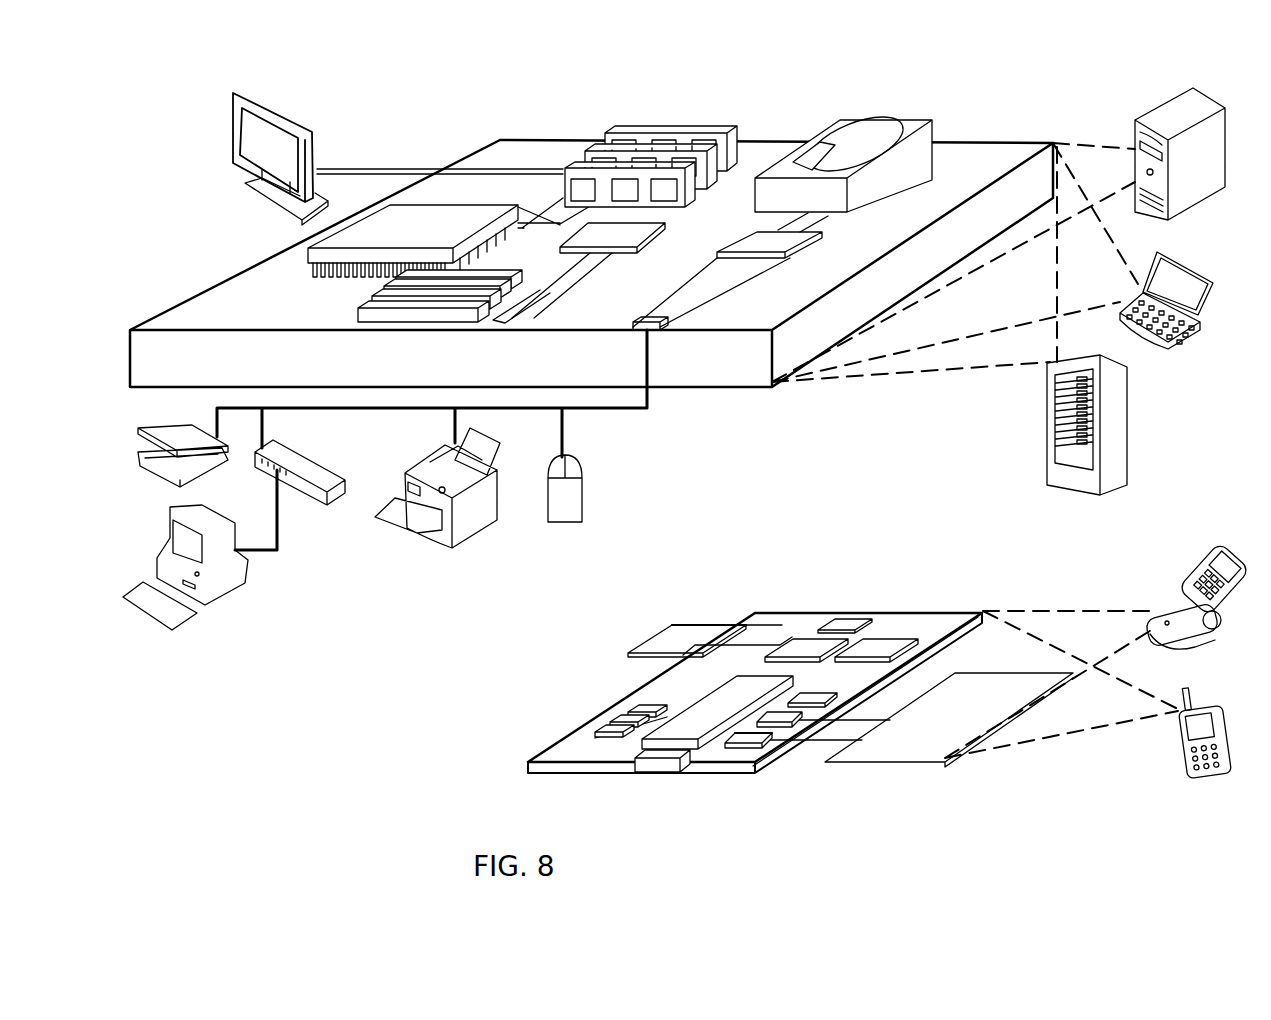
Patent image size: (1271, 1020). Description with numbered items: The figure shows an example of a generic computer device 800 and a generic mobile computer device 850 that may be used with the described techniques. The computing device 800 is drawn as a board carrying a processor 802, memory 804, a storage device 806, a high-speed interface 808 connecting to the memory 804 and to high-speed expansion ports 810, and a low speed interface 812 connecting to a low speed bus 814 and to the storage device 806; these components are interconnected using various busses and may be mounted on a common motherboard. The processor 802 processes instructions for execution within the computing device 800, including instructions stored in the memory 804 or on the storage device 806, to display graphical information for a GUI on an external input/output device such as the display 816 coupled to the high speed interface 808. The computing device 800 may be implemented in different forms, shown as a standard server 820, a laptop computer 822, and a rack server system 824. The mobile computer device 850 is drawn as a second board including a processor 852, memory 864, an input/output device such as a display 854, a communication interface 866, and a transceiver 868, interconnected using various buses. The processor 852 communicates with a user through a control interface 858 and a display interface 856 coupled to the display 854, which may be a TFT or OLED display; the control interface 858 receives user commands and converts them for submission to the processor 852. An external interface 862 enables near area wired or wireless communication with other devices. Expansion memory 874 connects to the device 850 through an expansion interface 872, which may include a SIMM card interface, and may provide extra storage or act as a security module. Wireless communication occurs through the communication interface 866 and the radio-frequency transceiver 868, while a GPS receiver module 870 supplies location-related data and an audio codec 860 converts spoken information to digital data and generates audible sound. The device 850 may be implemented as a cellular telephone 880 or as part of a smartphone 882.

The computing device 800 is at (430, 112).
The processor 802 is at (298, 256).
The memory 804 is at (618, 130).
The storage device 806 is at (835, 120).
The high-speed interface 808 is at (590, 243).
The high-speed expansion ports 810 is at (360, 300).
The low speed interface 812 is at (778, 243).
The low speed bus 814 is at (657, 332).
The display 816 is at (233, 98).
The standard server 820 is at (1135, 125).
The laptop computer 822 is at (1157, 252).
The rack server system 824 is at (1047, 450).
The mobile computer device 850 is at (697, 570).
The processor 852 is at (672, 749).
The display 854 is at (945, 762).
The display interface 856 is at (772, 752).
The control interface 858 is at (816, 722).
The audio codec 860 is at (810, 705).
The external interface 862 is at (660, 765).
The memory 864 is at (600, 727).
The communication interface 866 is at (805, 648).
The transceiver 868 is at (878, 648).
The GPS receiver module 870 is at (853, 612).
The expansion interface 872 is at (733, 620).
The expansion memory 874 is at (663, 622).
The cellular telephone 880 is at (1208, 553).
The smartphone 882 is at (1190, 690).